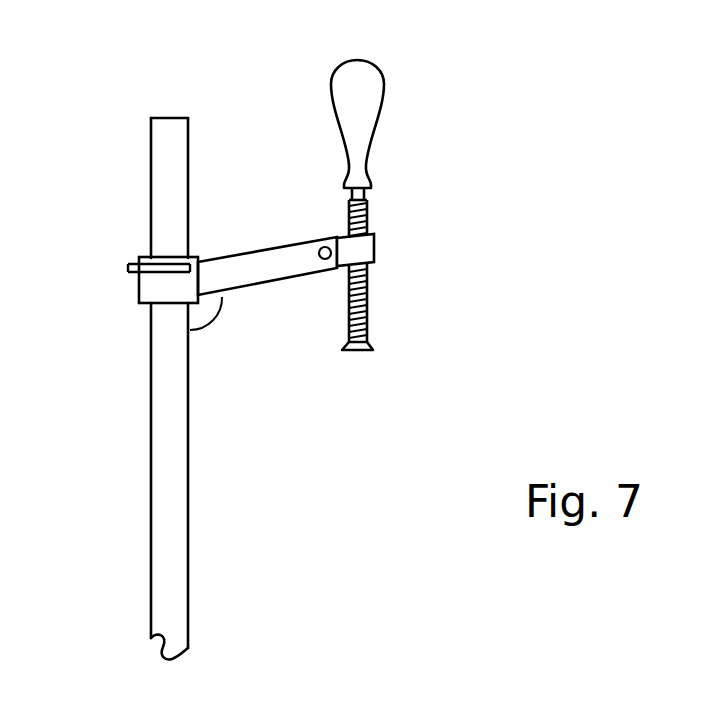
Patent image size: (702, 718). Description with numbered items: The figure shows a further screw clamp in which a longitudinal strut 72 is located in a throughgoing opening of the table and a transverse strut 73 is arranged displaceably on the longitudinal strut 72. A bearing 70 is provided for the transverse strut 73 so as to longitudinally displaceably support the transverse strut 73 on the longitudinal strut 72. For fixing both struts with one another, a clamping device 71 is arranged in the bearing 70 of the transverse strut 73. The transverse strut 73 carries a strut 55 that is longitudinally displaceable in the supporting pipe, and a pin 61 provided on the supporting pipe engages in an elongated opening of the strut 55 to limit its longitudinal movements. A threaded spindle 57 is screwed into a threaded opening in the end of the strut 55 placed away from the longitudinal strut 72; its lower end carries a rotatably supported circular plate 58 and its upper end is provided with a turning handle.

The longitudinal strut 72 is at (163, 140).
The clamping device 71 is at (132, 267).
The bearing 70 is at (154, 285).
The transverse strut 73 is at (232, 245).
The pin 61 is at (325, 259).
The strut 55 is at (363, 248).
The threaded spindle 57 is at (365, 315).
The circular plate 58 is at (360, 351).